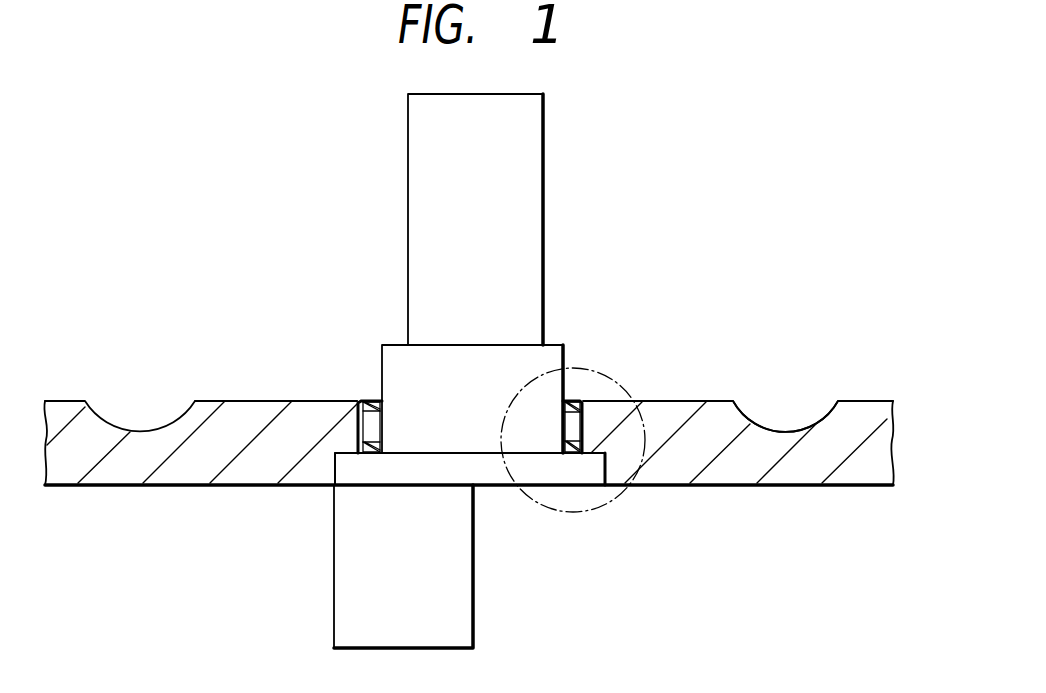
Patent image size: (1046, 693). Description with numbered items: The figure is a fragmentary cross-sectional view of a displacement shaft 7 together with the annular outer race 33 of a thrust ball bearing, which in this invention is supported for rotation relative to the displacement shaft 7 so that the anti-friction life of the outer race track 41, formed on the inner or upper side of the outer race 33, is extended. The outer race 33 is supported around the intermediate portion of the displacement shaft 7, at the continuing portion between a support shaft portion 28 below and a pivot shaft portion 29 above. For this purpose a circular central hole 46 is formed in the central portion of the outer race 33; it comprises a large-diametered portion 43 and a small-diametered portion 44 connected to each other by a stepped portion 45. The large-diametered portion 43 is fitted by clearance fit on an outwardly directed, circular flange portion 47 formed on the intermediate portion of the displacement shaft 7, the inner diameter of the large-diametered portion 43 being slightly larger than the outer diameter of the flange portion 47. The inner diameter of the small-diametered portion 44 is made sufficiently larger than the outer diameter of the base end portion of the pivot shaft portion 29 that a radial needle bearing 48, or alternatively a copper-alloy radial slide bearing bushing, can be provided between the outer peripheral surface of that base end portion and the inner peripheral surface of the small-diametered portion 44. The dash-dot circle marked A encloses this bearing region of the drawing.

The displacement shaft 7 is at (480, 428).
The support shaft portion 28 is at (347, 577).
The pivot shaft portion 29 is at (527, 187).
The outer race 33 is at (807, 473).
The outer race track 41 is at (804, 428).
The large-diametered portion 43 is at (592, 465).
The small-diametered portion 44 is at (572, 423).
The stepped portion 45 is at (352, 454).
The central hole 46 is at (357, 408).
The flange portion 47 is at (484, 474).
The radial needle bearing 48 is at (360, 428).
The detail area A is at (588, 360).